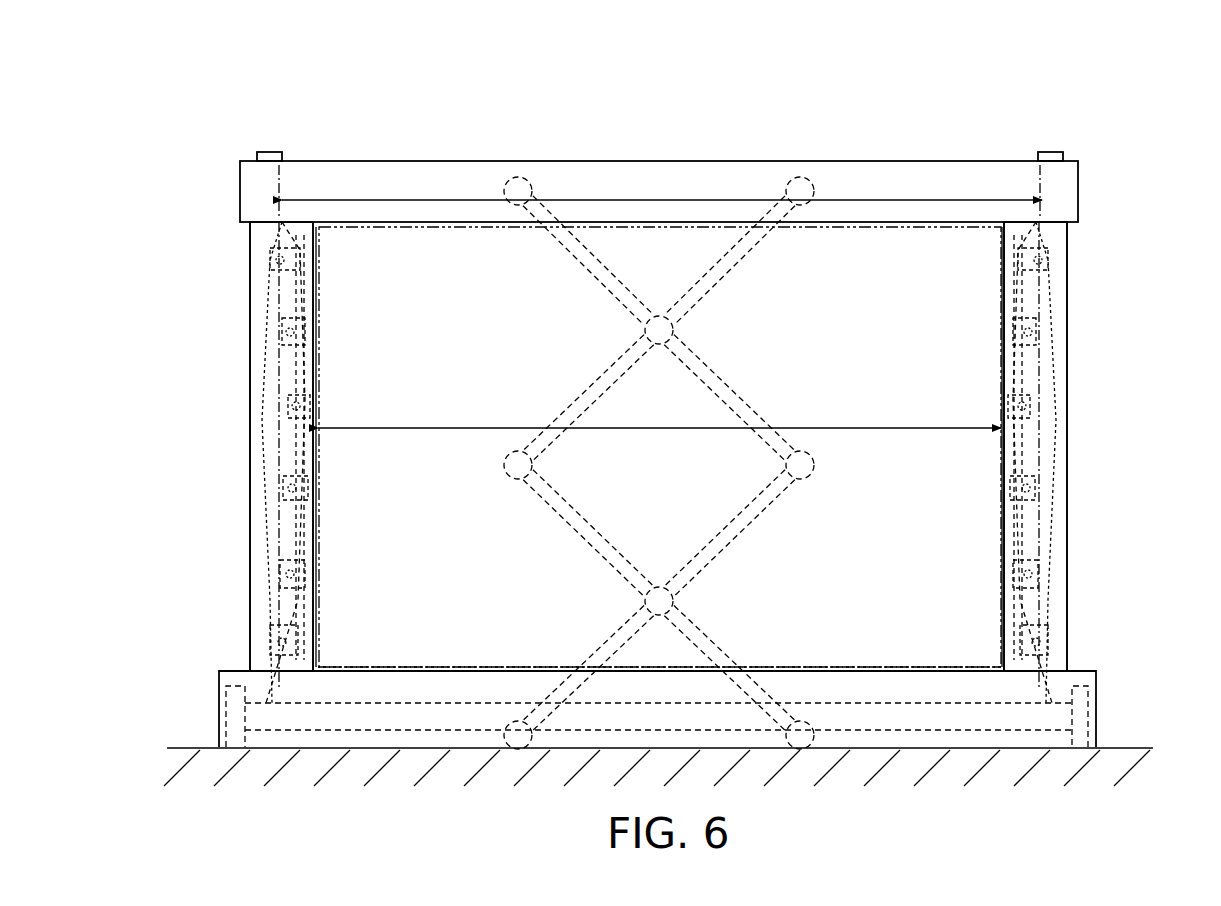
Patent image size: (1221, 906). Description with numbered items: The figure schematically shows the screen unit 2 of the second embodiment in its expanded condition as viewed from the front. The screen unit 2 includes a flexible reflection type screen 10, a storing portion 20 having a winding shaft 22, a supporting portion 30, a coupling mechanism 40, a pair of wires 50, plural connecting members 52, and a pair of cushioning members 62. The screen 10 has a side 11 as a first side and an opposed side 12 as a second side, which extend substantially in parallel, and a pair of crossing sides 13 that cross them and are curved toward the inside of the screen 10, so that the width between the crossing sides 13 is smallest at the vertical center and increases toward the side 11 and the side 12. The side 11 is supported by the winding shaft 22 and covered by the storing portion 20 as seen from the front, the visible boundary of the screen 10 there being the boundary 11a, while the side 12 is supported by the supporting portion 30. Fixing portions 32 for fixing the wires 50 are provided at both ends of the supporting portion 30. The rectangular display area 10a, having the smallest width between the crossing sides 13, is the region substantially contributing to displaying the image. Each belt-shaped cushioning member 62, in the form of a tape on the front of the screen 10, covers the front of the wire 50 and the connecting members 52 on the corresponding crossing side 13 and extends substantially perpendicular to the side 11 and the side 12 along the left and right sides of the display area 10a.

The screen unit 2 is at (1160, 126).
The screen 10 is at (1028, 372).
The display area 10a is at (1035, 524).
The side 11 is at (862, 706).
The boundary 11a is at (820, 680).
The side 12 is at (822, 228).
The crossing sides 13 is at (314, 466).
The storing portion 20 is at (1100, 672).
The winding shaft 22 is at (920, 704).
The supporting portion 30 is at (1082, 196).
The fixing portions 32 is at (272, 146).
The coupling mechanism 40 is at (735, 352).
The wires 50 is at (297, 433).
The connecting members 52 is at (282, 378).
The cushioning members 62 is at (257, 517).